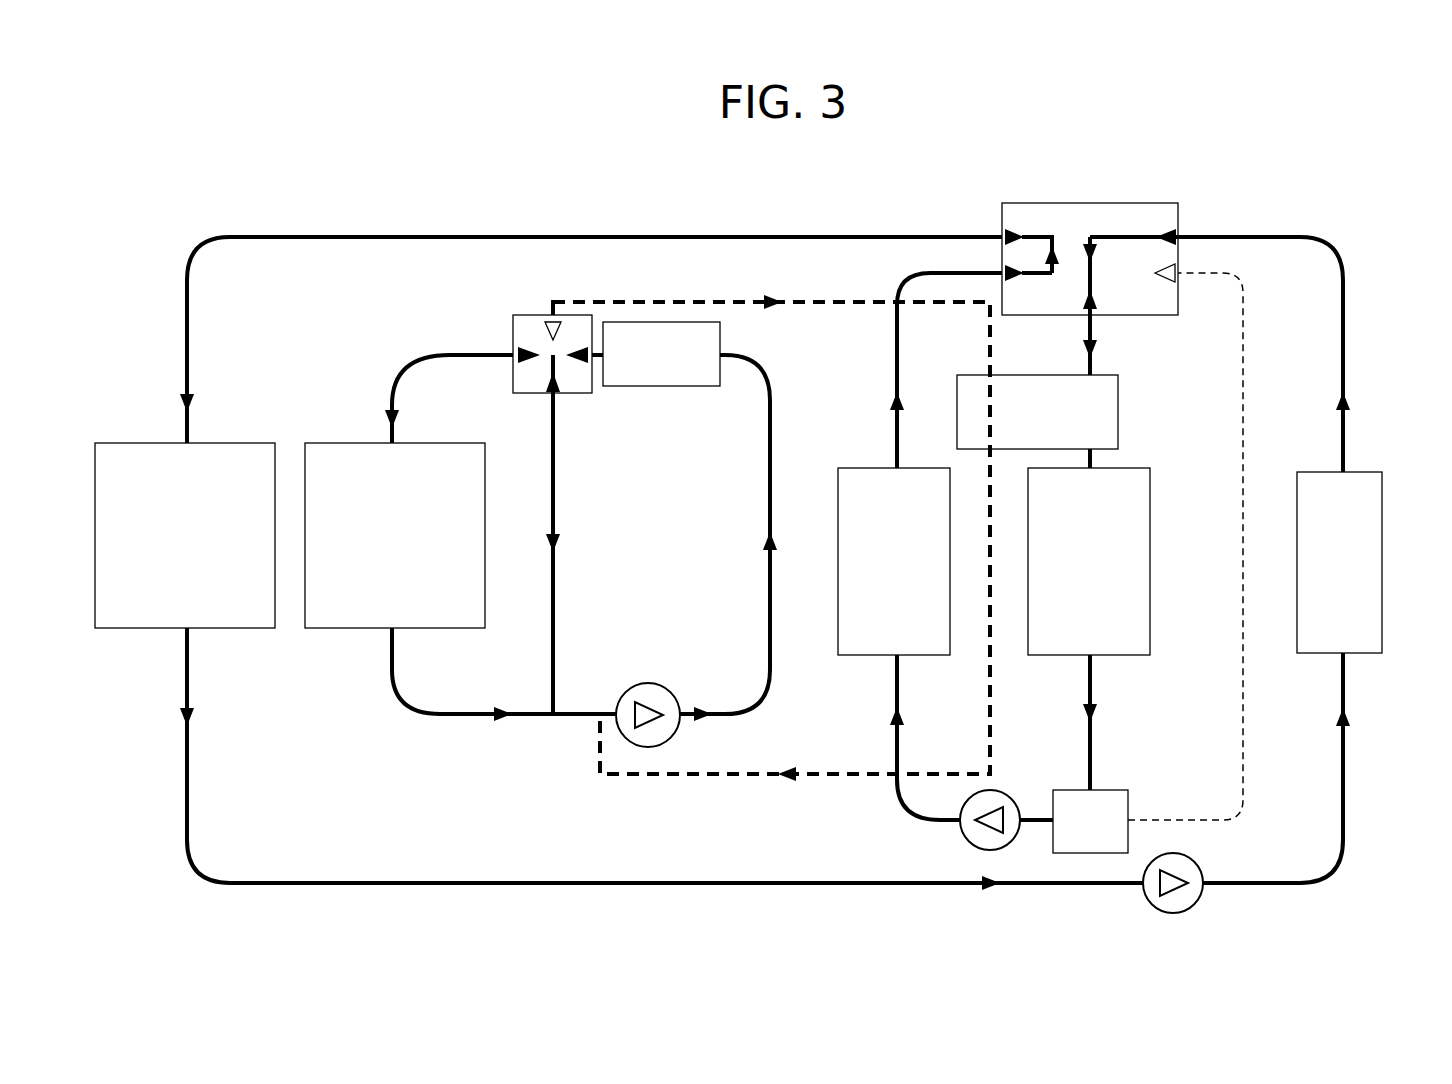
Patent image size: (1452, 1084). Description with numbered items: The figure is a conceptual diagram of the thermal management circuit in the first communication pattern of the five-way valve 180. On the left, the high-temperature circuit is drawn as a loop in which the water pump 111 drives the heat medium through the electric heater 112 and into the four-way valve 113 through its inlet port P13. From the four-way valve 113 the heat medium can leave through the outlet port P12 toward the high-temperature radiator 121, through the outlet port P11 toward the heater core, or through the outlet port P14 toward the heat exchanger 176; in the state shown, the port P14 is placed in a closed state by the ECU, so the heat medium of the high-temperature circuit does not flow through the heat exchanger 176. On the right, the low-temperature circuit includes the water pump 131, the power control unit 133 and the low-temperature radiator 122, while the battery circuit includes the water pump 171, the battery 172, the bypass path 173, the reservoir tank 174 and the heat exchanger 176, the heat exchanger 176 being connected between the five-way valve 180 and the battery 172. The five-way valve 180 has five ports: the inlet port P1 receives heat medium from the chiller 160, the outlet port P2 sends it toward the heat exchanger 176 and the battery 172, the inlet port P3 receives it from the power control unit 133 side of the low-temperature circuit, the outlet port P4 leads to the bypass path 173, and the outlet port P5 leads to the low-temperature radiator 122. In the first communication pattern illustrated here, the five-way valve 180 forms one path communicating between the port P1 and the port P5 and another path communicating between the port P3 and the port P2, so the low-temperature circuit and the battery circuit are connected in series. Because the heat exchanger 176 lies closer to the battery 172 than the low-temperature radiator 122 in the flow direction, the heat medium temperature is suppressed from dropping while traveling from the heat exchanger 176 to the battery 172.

The water pump 111 is at (662, 688).
The electric heater 112 is at (721, 340).
The four-way valve 113 is at (542, 341).
The high-temperature radiator 121 is at (428, 445).
The low-temperature radiator 122 is at (220, 445).
The water pump 131 is at (1193, 858).
The power control unit 133 is at (1380, 472).
The chiller 160 is at (866, 470).
The water pump 171 is at (974, 845).
The battery 172 is at (1122, 470).
The bypass path 173 is at (1246, 370).
The reservoir tank 174 is at (1108, 790).
The heat exchanger 176 is at (1095, 376).
The five-way valve 180 is at (1089, 262).
The port P1 is at (1012, 278).
The port P2 is at (1093, 310).
The port P3 is at (1172, 234).
The port P4 is at (1170, 280).
The port P5 is at (1010, 232).
The port P11 is at (548, 392).
The port P12 is at (522, 353).
The port P13 is at (578, 362).
The port P14 is at (576, 302).